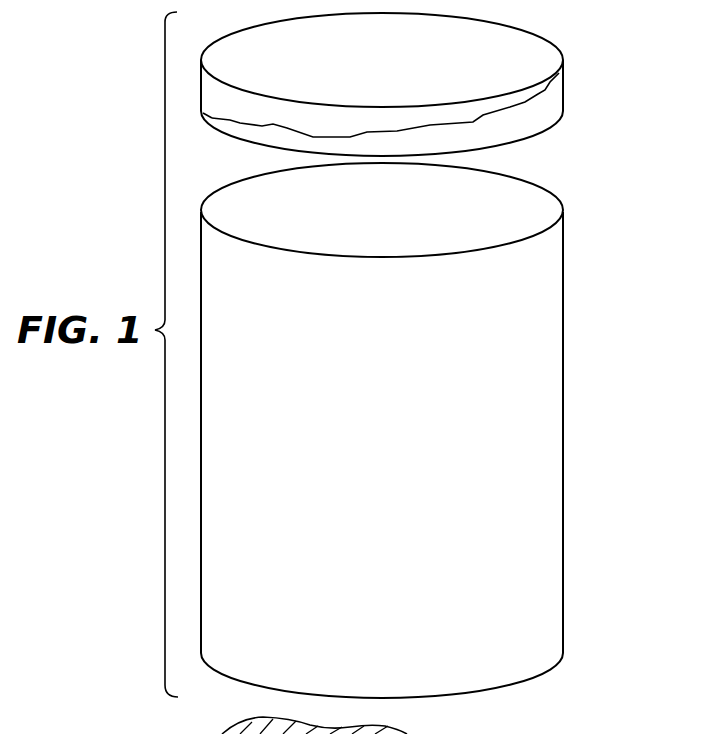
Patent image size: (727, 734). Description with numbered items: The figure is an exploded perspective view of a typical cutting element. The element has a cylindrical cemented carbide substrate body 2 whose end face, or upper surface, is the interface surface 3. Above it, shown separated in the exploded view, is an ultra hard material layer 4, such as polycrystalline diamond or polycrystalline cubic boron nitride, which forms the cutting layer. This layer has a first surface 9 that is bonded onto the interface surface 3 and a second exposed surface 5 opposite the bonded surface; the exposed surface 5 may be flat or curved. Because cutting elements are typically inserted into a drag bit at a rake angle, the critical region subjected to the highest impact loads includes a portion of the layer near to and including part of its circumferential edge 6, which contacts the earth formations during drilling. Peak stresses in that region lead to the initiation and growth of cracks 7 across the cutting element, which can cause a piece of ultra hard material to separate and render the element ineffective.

The cylindrical cemented carbide substrate body 2 is at (533, 340).
The interface surface 3 is at (498, 228).
The ultra hard material layer 4 is at (552, 100).
The exposed surface 5 is at (512, 65).
The circumferential edge 6 is at (563, 62).
The cracks 7 is at (483, 115).
The first surface 9 is at (255, 140).